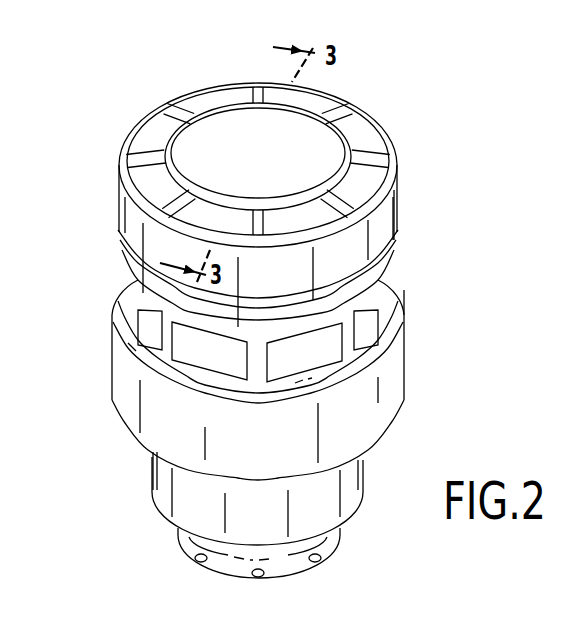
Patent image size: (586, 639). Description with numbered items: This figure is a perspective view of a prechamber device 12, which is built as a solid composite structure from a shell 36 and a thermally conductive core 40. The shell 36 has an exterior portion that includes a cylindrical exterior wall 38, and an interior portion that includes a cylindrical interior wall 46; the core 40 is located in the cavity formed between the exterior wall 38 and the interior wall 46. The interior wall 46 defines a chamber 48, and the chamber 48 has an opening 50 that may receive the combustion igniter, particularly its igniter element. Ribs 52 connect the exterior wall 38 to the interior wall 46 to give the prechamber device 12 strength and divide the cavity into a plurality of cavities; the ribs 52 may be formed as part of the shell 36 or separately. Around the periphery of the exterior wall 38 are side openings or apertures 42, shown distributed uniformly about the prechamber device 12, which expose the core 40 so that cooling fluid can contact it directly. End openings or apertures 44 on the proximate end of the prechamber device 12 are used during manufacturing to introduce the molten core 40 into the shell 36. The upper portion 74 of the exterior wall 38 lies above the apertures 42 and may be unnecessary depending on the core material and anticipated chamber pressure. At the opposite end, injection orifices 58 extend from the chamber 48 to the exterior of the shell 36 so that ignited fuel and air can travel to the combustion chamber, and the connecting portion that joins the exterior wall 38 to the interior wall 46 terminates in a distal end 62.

The prechamber device 12 is at (398, 115).
The shell 36 is at (135, 150).
The exterior wall 38 is at (392, 384).
The thermally conductive core 40 is at (212, 100).
The side openings or apertures 42 is at (267, 345).
The cavity openings, end openings, or apertures 44 is at (168, 108).
The interior wall 46 is at (264, 161).
The chamber 48 is at (304, 156).
The opening 50 is at (350, 212).
The ribs 52 is at (132, 158).
The injection orifices 58 is at (258, 577).
The distal end 62 is at (300, 572).
The upper portion 74 is at (117, 212).